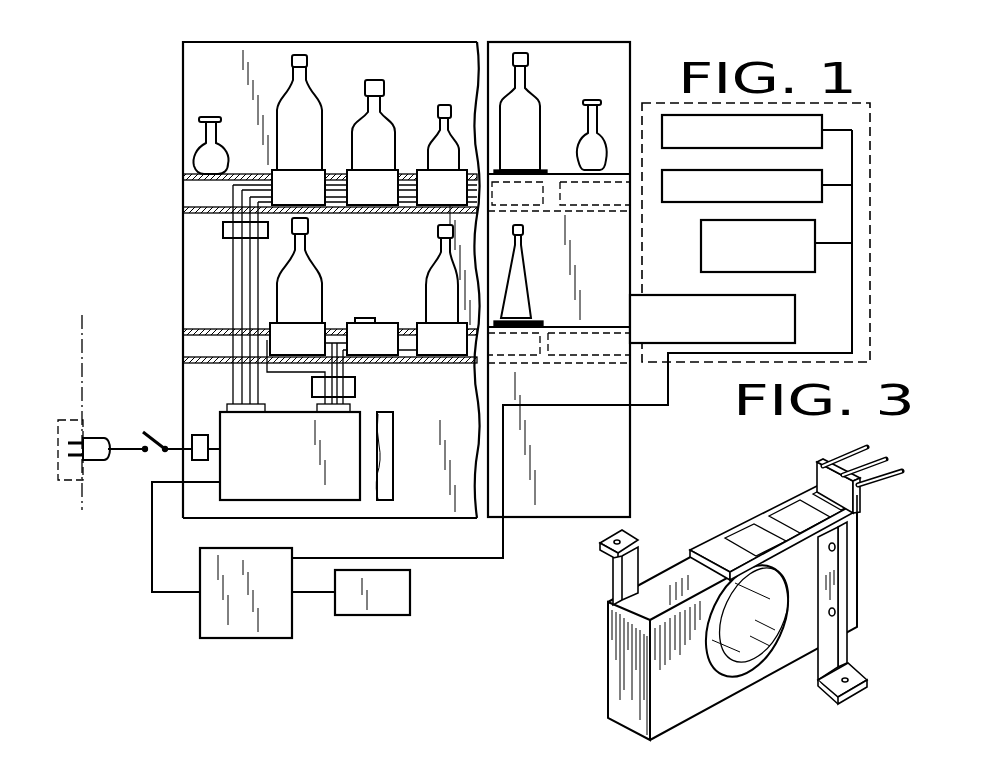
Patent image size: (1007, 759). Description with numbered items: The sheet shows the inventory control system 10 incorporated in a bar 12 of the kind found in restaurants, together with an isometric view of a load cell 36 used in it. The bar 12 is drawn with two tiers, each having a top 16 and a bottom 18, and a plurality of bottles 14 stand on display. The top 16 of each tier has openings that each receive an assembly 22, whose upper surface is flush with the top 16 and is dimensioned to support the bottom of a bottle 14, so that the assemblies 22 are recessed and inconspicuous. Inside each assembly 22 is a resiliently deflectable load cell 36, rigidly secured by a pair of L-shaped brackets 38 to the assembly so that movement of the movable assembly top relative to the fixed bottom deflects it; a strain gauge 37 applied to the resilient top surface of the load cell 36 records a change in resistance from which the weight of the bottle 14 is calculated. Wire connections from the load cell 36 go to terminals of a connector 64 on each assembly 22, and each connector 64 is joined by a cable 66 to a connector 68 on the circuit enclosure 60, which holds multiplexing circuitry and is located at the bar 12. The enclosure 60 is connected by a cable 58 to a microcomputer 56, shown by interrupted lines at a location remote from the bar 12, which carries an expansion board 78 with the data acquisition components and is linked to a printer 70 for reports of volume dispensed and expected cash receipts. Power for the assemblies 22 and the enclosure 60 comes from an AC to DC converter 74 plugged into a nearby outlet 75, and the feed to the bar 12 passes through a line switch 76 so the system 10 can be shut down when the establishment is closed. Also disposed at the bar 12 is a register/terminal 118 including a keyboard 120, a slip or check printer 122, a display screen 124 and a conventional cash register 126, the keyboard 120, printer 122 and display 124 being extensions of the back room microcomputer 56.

In FIG. 1, the inventory control system 10 is at (276, 31).
In FIG. 1, the bar 12 is at (179, 75).
In FIG. 1, the bottles 14 is at (388, 118).
In FIG. 1, the top 16 is at (183, 176).
In FIG. 1, the bottom 18 is at (183, 210).
In FIG. 1, the assembly 22 is at (306, 184).
In FIG. 1, the microcomputer 56 is at (196, 621).
In FIG. 1, the cable 58 is at (152, 573).
In FIG. 1, the circuit enclosure 60 is at (338, 487).
In FIG. 1, the connector 64 is at (228, 233).
In FIG. 1, the cable 66 is at (233, 308).
In FIG. 1, the connector 68 is at (230, 402).
In FIG. 1, the printer 70 is at (382, 612).
In FIG. 1, the AC to DC converter 74 is at (200, 435).
In FIG. 1, the power outlet 75 is at (48, 453).
In FIG. 1, the line switch 76 is at (155, 452).
In FIG. 1, the expansion board 78 is at (252, 632).
In FIG. 1, the register/terminal 118 is at (876, 133).
In FIG. 1, the keyboard 120 is at (827, 138).
In FIG. 1, the slip or check printer 122 is at (824, 196).
In FIG. 1, the display screen 124 is at (817, 258).
In FIG. 1, the cash register 126 is at (797, 308).
In FIG. 3, the load cell 36 is at (607, 641).
In FIG. 3, the strain gauge 37 is at (757, 513).
In FIG. 3, the L-shaped brackets 38 is at (600, 548).